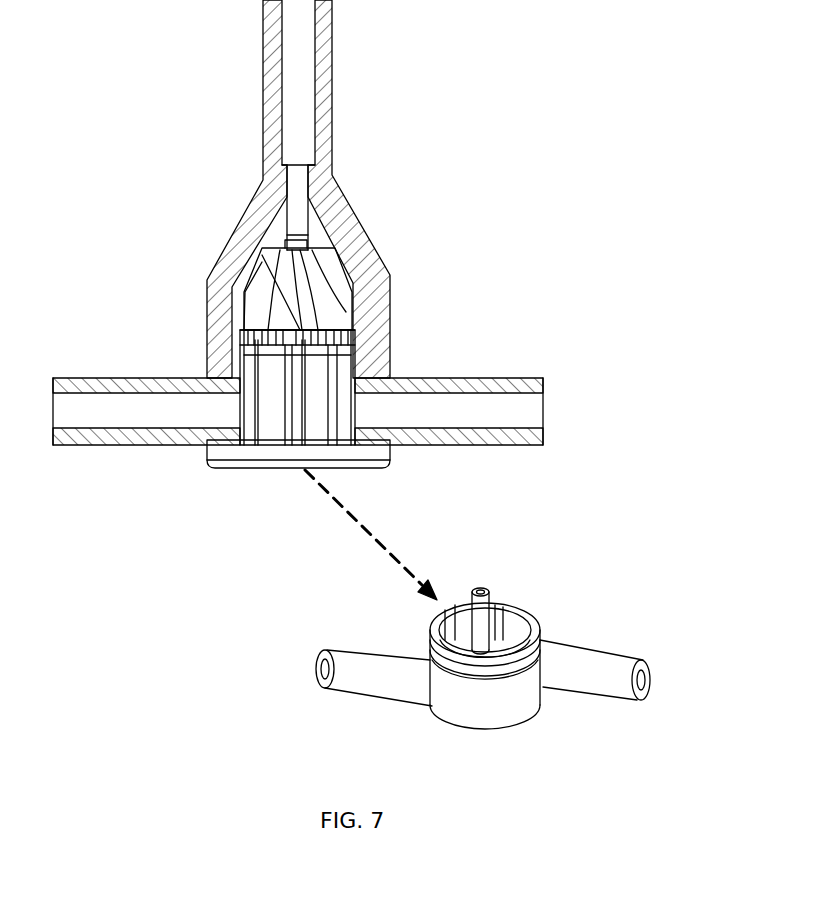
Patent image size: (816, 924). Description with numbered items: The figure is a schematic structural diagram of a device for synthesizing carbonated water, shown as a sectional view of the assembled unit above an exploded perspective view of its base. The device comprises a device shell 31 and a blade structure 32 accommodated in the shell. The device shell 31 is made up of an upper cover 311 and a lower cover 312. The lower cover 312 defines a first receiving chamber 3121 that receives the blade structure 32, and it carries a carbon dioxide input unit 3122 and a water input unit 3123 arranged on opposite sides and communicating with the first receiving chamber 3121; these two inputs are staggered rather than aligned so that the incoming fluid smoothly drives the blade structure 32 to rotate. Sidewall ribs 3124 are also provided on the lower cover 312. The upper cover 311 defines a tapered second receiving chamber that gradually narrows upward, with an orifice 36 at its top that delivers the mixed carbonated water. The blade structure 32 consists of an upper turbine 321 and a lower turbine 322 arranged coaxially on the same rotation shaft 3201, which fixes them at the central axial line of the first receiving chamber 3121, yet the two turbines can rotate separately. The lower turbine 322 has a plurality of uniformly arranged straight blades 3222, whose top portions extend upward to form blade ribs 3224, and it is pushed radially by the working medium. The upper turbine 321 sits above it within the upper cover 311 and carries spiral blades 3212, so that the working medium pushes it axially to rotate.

The device shell 31 is at (298, 222).
The upper cover 311 is at (345, 228).
The lower cover 312 is at (479, 605).
The first receiving chamber 3121 is at (513, 628).
The carbon dioxide input unit 3122 is at (582, 665).
The water input unit 3123 is at (358, 665).
The sidewall ribs 3124 is at (492, 563).
The rotation shaft 3201 is at (480, 585).
The blade structure 32 is at (320, 351).
The upper turbine 321 is at (305, 300).
The spiral blades 3212 is at (263, 273).
The lower turbine 322 is at (298, 395).
The straight blades 3222 is at (272, 410).
The blade ribs 3224 is at (258, 345).
The orifice 36 is at (297, 193).